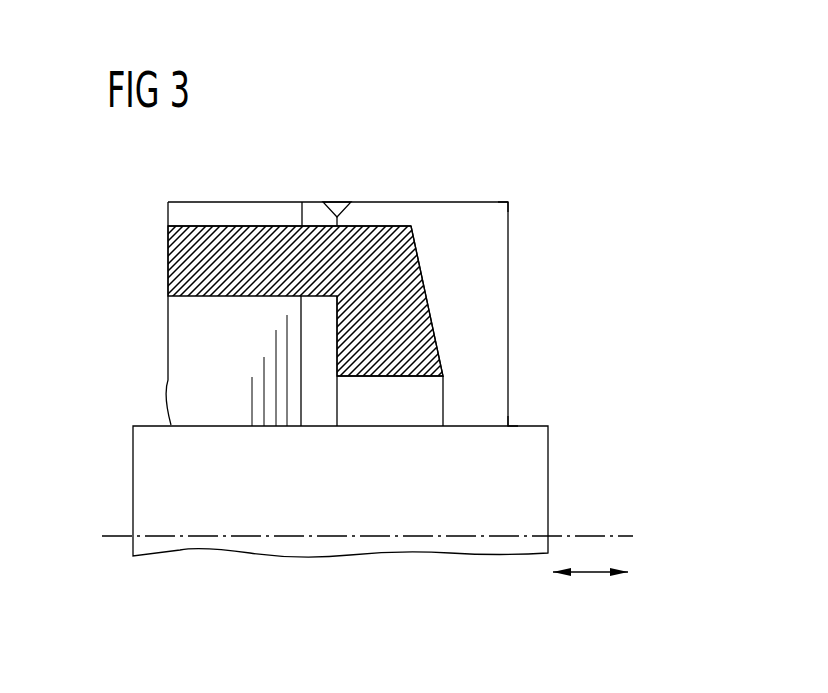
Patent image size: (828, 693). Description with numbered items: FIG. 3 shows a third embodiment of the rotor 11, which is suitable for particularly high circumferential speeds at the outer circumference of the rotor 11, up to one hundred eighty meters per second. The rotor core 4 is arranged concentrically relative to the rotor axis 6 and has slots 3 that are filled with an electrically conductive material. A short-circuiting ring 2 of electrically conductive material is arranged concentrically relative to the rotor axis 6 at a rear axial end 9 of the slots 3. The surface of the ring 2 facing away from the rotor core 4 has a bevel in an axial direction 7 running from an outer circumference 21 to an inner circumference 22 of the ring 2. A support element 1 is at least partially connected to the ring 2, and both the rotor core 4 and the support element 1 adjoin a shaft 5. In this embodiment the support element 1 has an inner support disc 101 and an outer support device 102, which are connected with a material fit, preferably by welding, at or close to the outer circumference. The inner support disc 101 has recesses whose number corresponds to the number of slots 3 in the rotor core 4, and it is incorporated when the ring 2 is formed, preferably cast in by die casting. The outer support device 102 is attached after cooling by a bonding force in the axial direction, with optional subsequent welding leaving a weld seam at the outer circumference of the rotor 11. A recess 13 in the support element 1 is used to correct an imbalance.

The support element 1 is at (404, 216).
The short-circuiting ring 2 is at (438, 335).
The slots 3 is at (168, 259).
The rotor core 4 is at (168, 216).
The shaft 5 is at (222, 556).
The rotor axis 6 is at (626, 534).
The axial direction 7 is at (590, 574).
The rear axial end 9 is at (520, 172).
The rotor 11 is at (541, 285).
The recess 13 is at (337, 204).
The outer circumference 21 is at (538, 202).
The inner circumference 22 is at (512, 421).
The inner support disc 101 is at (313, 207).
The outer support device 102 is at (458, 217).